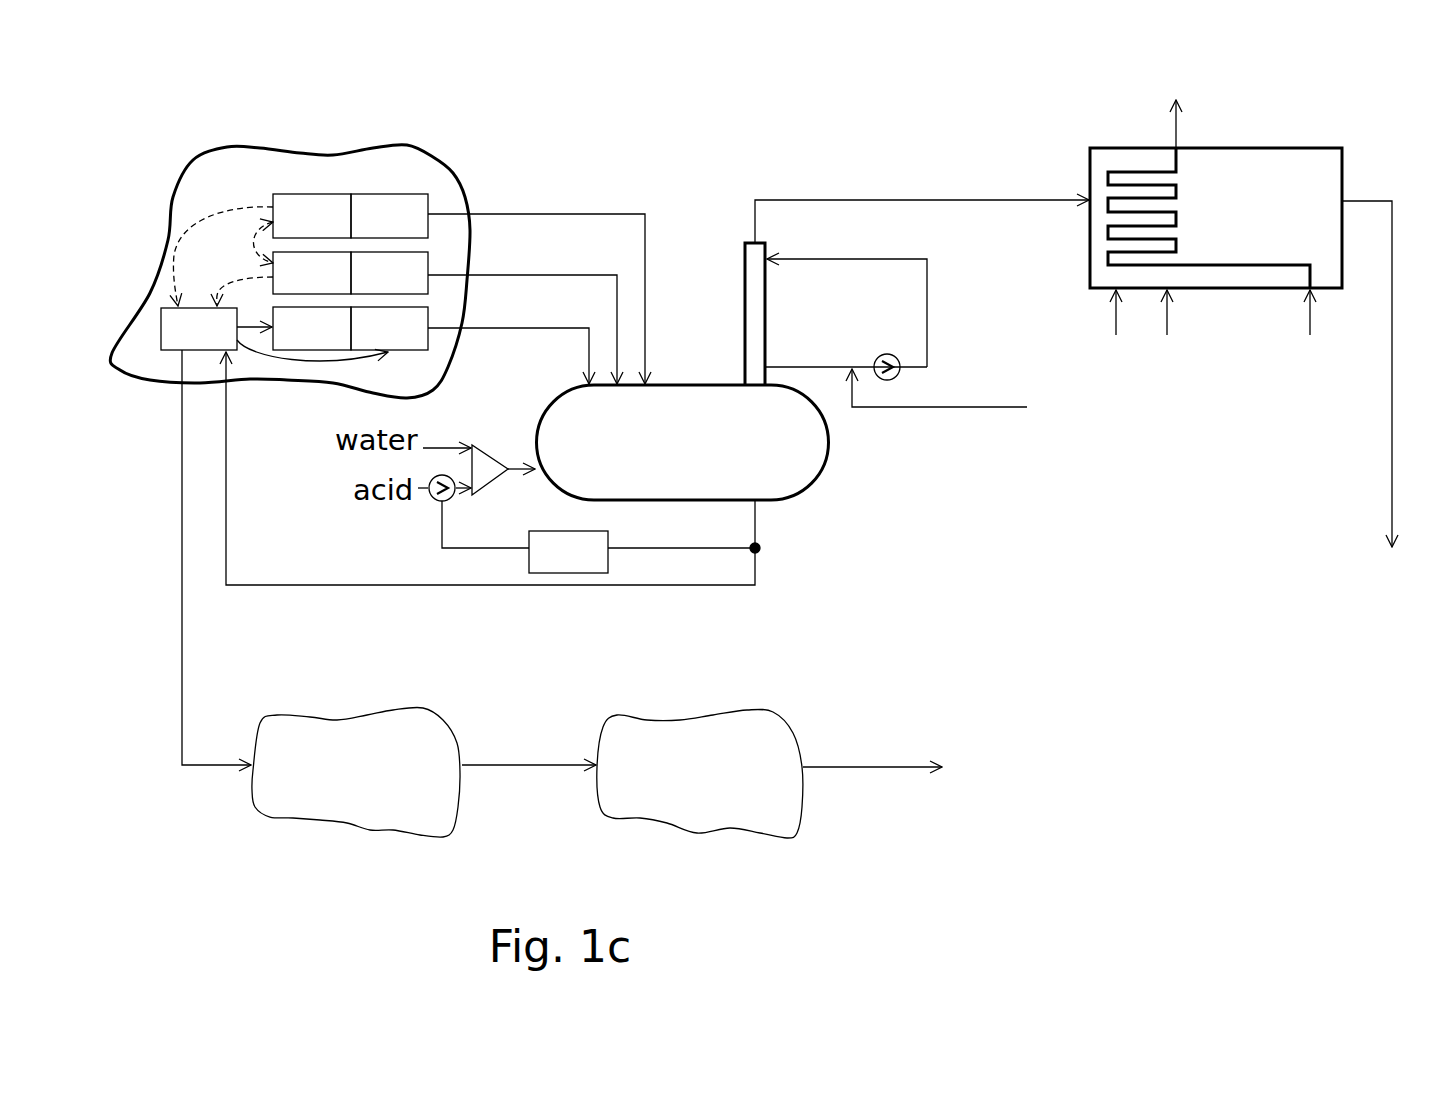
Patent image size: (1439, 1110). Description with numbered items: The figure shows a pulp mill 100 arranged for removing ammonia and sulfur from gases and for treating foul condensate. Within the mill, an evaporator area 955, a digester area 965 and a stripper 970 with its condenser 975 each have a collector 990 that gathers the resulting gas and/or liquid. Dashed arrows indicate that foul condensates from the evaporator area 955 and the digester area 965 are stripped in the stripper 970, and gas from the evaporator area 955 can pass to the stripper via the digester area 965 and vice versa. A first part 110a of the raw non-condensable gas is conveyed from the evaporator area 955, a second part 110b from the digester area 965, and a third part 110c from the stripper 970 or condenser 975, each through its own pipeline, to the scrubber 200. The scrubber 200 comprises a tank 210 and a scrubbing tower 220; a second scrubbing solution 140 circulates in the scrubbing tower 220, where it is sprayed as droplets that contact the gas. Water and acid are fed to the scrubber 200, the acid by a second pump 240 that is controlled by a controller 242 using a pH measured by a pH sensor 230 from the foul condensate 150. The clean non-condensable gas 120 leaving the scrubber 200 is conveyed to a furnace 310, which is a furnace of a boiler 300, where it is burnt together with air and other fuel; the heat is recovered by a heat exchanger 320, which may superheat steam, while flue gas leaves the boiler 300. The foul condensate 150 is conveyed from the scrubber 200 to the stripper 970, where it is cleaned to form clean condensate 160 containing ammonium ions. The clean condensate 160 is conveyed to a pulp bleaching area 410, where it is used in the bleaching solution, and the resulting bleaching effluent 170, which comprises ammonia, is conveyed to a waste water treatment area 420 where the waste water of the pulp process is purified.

The pulp mill 100 is at (1087, 575).
The first part of the raw non-condensable gas 110a is at (505, 214).
The second part of the raw non-condensable gas 110b is at (577, 275).
The third part of the raw non-condensable gas 110c is at (541, 328).
The clean non-condensable gas 120 is at (830, 200).
The second scrubbing solution 140 is at (927, 325).
The foul condensate 150 is at (757, 527).
The clean condensate 160 is at (182, 622).
The bleaching effluent 170 is at (510, 768).
The scrubber 200 is at (718, 372).
The tank 210 is at (657, 454).
The scrubbing tower 220 is at (766, 335).
The pH sensor 230 is at (760, 555).
The second pump 240 is at (438, 497).
The controller 242 is at (543, 566).
The boiler 300 is at (1307, 147).
The furnace 310 is at (1217, 216).
The heat exchanger 320 is at (1137, 168).
The pulp bleaching area 410 is at (330, 789).
The waste water treatment area 420 is at (673, 787).
The evaporator area 955 is at (287, 231).
The digester area 965 is at (287, 287).
The condenser 975 is at (287, 341).
The collector 990 is at (365, 231).
The stripper 970 is at (174, 342).